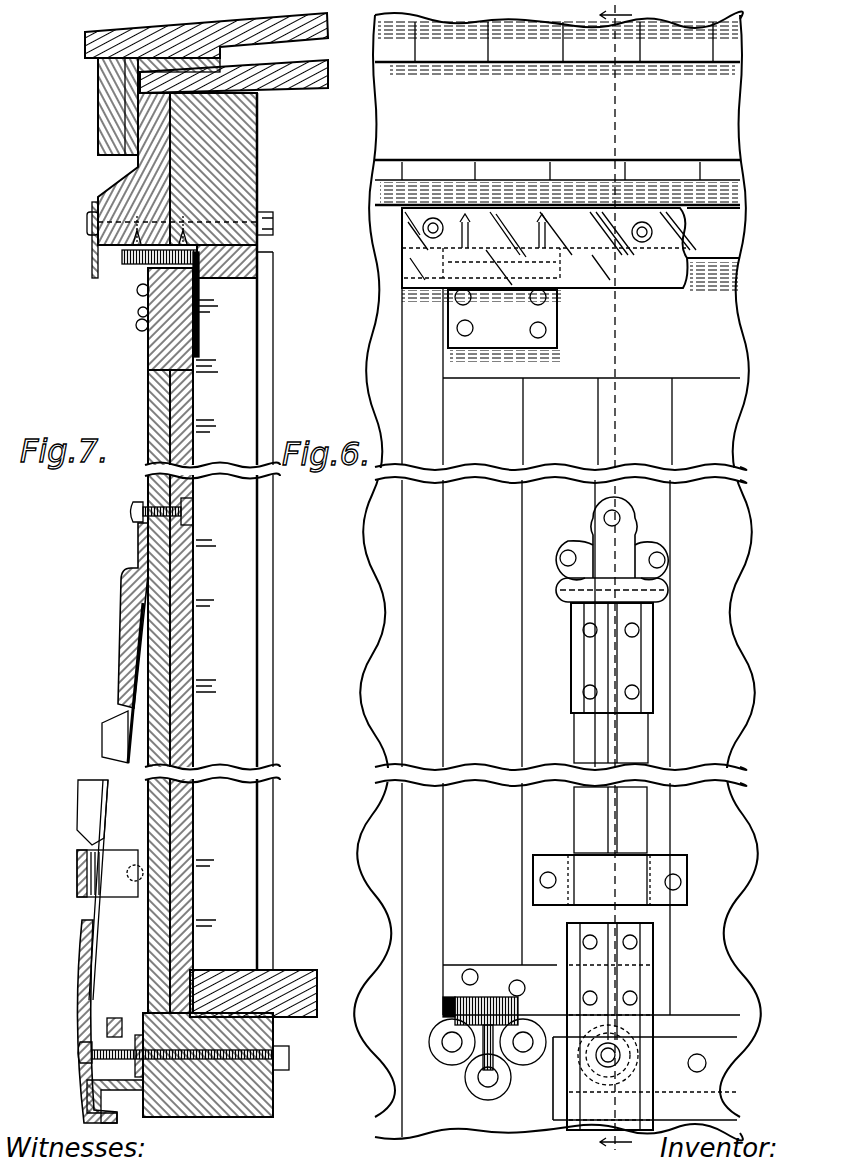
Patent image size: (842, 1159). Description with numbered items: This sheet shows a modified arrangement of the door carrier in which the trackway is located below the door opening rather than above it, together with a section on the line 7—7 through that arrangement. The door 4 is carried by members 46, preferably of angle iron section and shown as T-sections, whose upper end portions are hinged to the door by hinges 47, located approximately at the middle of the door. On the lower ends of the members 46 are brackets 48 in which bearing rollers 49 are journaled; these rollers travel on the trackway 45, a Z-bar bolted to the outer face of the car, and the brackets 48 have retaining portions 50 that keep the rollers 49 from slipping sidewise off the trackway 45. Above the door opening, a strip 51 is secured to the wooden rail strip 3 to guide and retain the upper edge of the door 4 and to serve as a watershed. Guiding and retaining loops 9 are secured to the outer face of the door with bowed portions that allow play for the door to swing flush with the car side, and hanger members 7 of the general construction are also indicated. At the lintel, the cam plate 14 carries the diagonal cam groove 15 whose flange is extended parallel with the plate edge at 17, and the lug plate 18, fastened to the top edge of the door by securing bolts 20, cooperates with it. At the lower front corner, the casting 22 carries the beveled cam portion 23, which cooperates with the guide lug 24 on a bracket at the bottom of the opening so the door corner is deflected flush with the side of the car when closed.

In FIG. 7, the wooden rail strip 3 is at (123, 192).
In FIG. 6, the wooden rail strip 3 is at (718, 237).
In FIG. 7, the door 4 is at (186, 393).
In FIG. 6, the door 4 is at (571, 712).
In FIG. 6, the hanger member 7 is at (616, 577).
In FIG. 7, the guiding and retaining loop 9 is at (80, 872).
In FIG. 6, the guiding and retaining loop 9 is at (633, 876).
In FIG. 7, the cam plate 14 is at (173, 271).
In FIG. 7, the diagonal cam groove 15 is at (135, 266).
In FIG. 7, the flange extension 17 is at (143, 268).
In FIG. 7, the lug plate 18 is at (147, 312).
In FIG. 6, the lug plate 18 is at (514, 333).
In FIG. 7, the securing bolt 20 is at (145, 325).
In FIG. 6, the securing bolt 20 is at (470, 326).
In FIG. 6, the casting 22 is at (524, 982).
In FIG. 6, the beveled cam portion 23 is at (453, 1004).
In FIG. 6, the guide lug 24 is at (475, 1020).
In FIG. 7, the trackway 45 is at (95, 1097).
In FIG. 6, the trackway 45 is at (713, 1080).
In FIG. 7, the carrier member 46 is at (110, 740).
In FIG. 6, the carrier member 46 is at (637, 743).
In FIG. 7, the hinge 47 is at (143, 550).
In FIG. 6, the hinge 47 is at (613, 580).
In FIG. 7, the bracket 48 is at (83, 1000).
In FIG. 6, the bracket 48 is at (633, 978).
In FIG. 7, the bearing roller 49 is at (113, 1018).
In FIG. 6, the bearing roller 49 is at (637, 1037).
In FIG. 7, the retaining portion 50 is at (118, 1116).
In FIG. 7, the strip 51 is at (92, 252).
In FIG. 6, the strip 51 is at (594, 211).